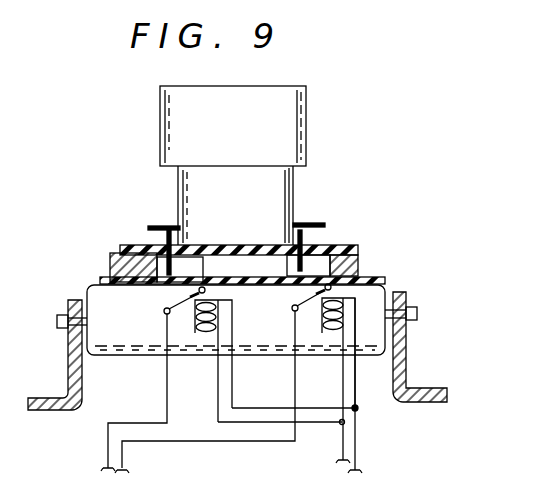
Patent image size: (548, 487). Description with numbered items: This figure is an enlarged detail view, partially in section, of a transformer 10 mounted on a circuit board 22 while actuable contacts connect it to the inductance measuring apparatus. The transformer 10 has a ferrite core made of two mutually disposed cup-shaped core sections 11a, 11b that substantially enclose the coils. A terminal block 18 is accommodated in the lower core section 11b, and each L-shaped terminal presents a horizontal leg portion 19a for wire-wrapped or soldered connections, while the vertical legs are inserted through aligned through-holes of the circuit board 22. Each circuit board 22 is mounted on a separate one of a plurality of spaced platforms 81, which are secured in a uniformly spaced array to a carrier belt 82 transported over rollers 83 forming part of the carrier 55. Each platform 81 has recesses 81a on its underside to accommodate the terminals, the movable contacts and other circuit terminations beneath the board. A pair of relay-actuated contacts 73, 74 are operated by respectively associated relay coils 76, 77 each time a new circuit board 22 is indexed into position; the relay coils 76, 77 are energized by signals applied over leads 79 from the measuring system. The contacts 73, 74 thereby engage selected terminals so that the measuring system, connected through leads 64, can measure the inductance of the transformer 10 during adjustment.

The transformer 10 is at (306, 82).
The cup-shaped core section 11a is at (307, 115).
The cup-shaped core section 11b is at (292, 188).
The horizontal leg portion 19a is at (160, 226).
The terminal block 18 is at (165, 236).
The circuit board 22 is at (110, 254).
The platform 81 is at (360, 251).
The recess 81a is at (190, 263).
The carrier belt 82 is at (100, 280).
The roller 83 is at (128, 356).
The carrier 55 is at (70, 362).
The relay-actuated contact 73 is at (195, 291).
The relay-actuated contact 74 is at (320, 291).
The relay coil 76 is at (203, 335).
The relay coil 77 is at (325, 333).
The leads 64 is at (122, 445).
The leads 79 is at (345, 436).